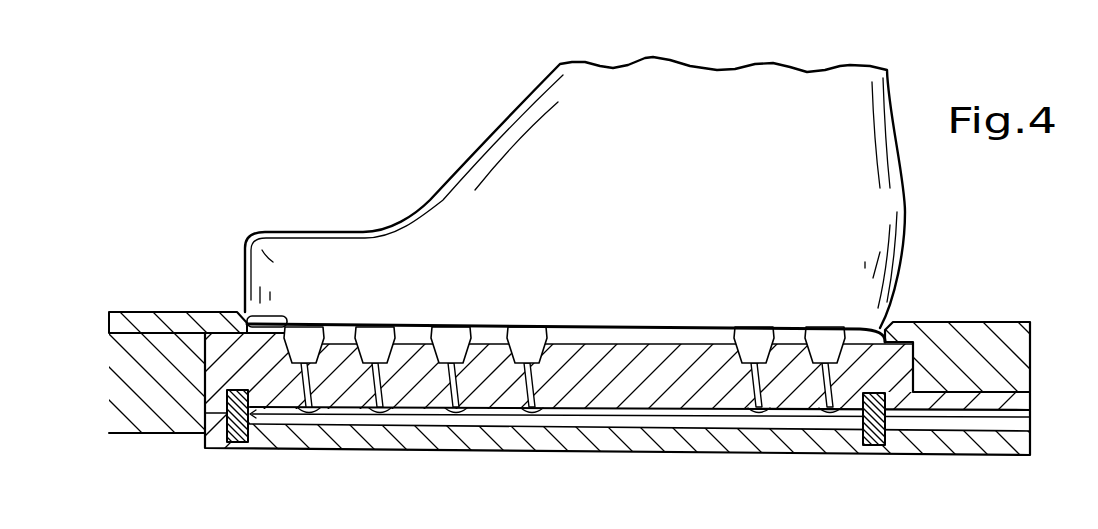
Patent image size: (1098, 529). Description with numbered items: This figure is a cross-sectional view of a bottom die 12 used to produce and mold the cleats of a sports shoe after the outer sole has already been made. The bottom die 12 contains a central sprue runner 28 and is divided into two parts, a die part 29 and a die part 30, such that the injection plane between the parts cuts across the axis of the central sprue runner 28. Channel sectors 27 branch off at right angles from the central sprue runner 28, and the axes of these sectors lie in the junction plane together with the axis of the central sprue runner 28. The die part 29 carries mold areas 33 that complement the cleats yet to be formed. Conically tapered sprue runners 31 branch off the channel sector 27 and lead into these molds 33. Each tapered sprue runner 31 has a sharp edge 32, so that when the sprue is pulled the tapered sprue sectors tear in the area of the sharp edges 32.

The bottom die 12 is at (235, 378).
The channel sectors 27 is at (761, 415).
The central sprue runner 28 is at (626, 420).
The die part 29 is at (220, 378).
The die part 30 is at (327, 440).
The conically tapered sprue runners 31 is at (760, 378).
The sharp edge 32 is at (698, 343).
The mold areas 33 is at (750, 350).